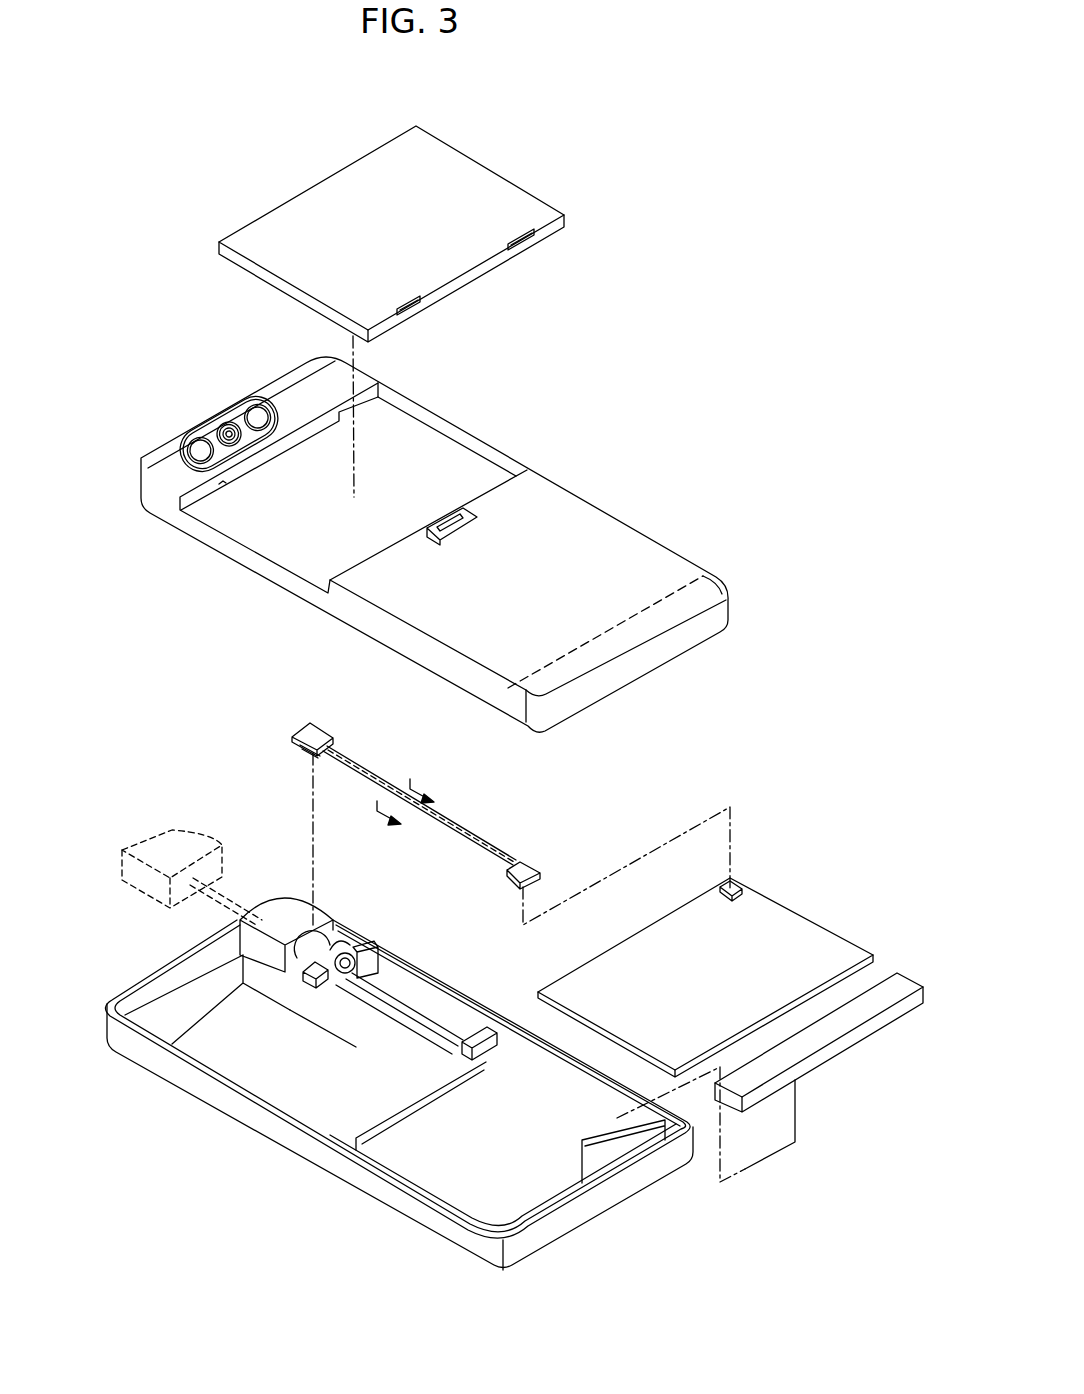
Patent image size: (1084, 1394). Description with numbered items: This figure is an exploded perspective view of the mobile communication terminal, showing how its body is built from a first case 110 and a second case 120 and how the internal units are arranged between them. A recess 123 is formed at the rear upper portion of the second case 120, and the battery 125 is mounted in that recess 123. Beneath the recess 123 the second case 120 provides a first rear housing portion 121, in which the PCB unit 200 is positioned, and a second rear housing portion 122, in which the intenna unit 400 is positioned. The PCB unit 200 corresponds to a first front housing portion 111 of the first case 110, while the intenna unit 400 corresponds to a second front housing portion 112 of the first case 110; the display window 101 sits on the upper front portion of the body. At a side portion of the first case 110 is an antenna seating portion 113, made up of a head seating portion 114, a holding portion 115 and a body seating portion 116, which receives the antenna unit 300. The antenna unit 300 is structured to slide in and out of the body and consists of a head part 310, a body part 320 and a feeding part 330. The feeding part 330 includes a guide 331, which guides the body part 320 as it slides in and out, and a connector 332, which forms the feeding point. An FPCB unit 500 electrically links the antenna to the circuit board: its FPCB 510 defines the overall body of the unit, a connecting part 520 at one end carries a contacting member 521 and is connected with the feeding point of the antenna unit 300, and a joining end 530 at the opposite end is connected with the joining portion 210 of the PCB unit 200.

The display window 101 is at (330, 1112).
The first case 110 is at (217, 1107).
The first front housing portion 111 is at (438, 1182).
The second front housing portion 112 is at (553, 1193).
The antenna seating portion 113 is at (392, 962).
The head seating portion 114 is at (283, 910).
The holding portion 115 is at (338, 940).
The body seating portion 116 is at (437, 987).
The second case 120 is at (297, 387).
The first rear housing portion 121 is at (623, 543).
The second rear housing portion 122 is at (713, 588).
The recess 123 is at (458, 453).
The battery 125 is at (458, 163).
The PCB unit 200 is at (862, 930).
The joining portion 210 is at (745, 884).
The antenna unit 300 is at (366, 1004).
The head part 310 is at (158, 835).
The body part 320 is at (428, 1018).
The feeding part 330 is at (318, 940).
The guide 331 is at (345, 953).
The connector 332 is at (303, 982).
The intenna unit 400 is at (843, 1062).
The FPCB unit 500 is at (465, 803).
The FPCB 510 is at (463, 833).
The connecting part 520 is at (286, 727).
The contacting member 521 is at (300, 748).
The joining end 530 is at (527, 867).